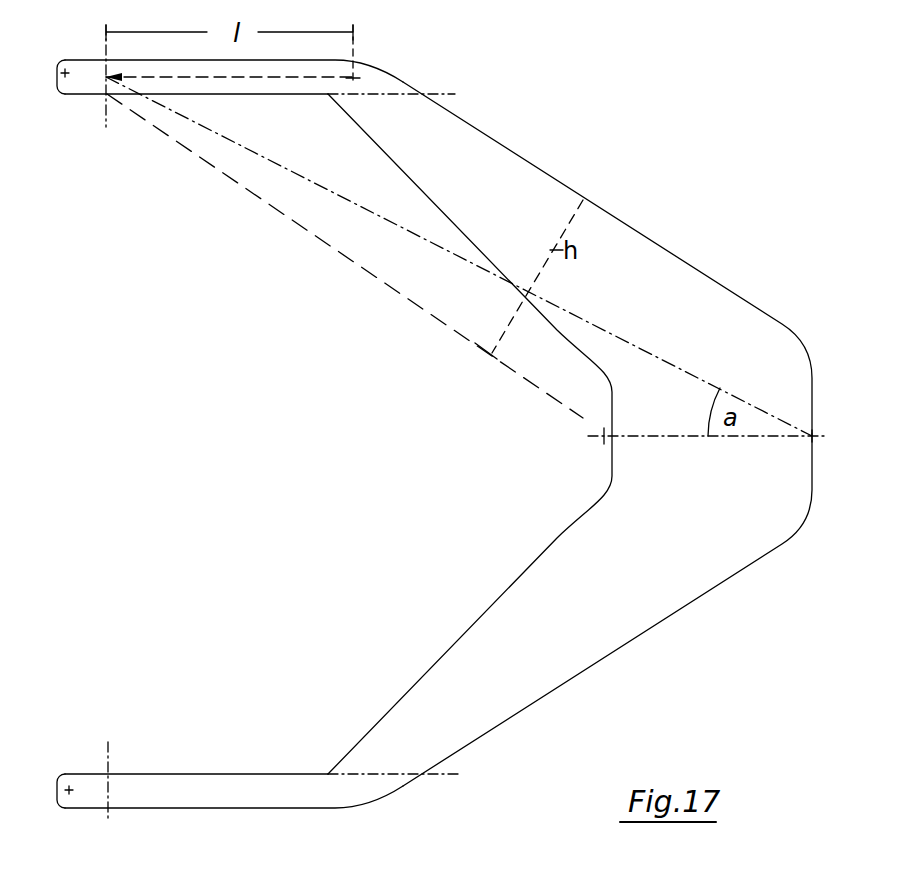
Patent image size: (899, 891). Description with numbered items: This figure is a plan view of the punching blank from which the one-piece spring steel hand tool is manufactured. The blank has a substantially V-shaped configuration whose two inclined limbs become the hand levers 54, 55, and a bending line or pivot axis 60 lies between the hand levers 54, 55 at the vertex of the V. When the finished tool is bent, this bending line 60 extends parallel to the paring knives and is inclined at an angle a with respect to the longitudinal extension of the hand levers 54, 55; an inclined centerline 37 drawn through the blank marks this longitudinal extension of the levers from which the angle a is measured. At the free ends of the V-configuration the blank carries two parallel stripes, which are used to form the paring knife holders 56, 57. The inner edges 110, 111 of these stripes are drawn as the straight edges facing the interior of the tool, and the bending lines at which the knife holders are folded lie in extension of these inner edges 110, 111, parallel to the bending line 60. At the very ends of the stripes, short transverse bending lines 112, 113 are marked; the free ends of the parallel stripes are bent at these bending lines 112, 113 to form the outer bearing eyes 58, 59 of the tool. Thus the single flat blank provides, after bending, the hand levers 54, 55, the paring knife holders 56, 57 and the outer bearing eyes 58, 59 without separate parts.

The inclined axis line 37 is at (620, 341).
The hand lever 54 is at (493, 152).
The hand lever 55 is at (507, 710).
The paring knife holder 56 is at (262, 93).
The paring knife holder 57 is at (155, 781).
The outer bearing eye 58 is at (82, 92).
The outer bearing eye 59 is at (85, 780).
The bending line 60 is at (657, 440).
The inner edge 110 is at (220, 99).
The inner edge 111 is at (244, 762).
The bending line 112 is at (98, 92).
The bending line 113 is at (108, 787).